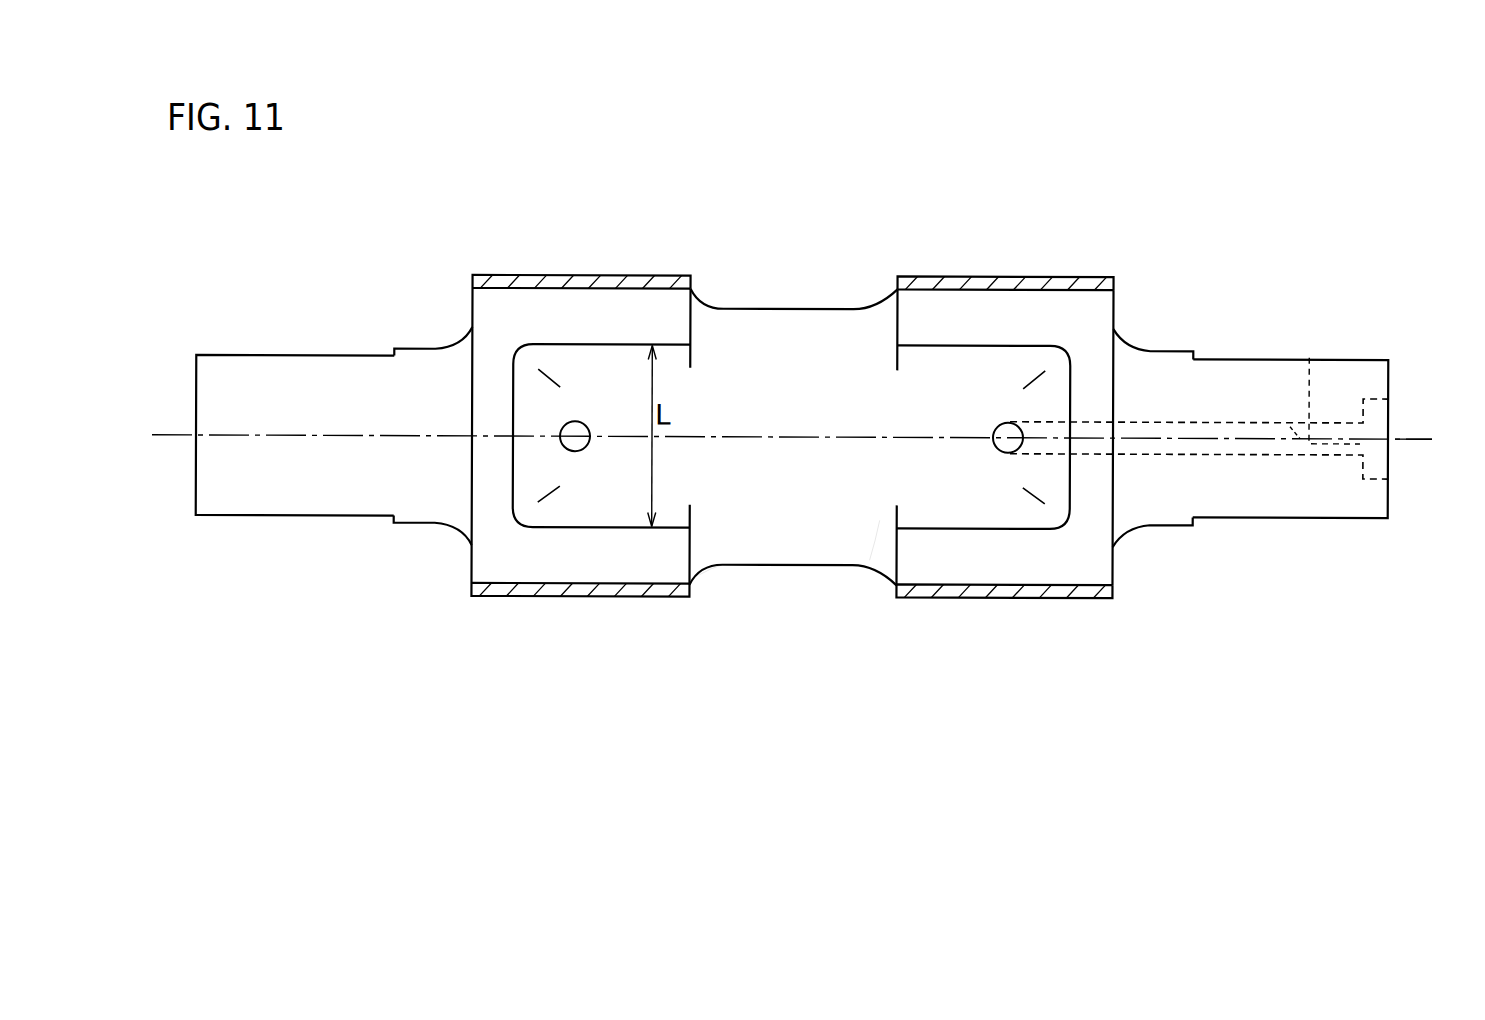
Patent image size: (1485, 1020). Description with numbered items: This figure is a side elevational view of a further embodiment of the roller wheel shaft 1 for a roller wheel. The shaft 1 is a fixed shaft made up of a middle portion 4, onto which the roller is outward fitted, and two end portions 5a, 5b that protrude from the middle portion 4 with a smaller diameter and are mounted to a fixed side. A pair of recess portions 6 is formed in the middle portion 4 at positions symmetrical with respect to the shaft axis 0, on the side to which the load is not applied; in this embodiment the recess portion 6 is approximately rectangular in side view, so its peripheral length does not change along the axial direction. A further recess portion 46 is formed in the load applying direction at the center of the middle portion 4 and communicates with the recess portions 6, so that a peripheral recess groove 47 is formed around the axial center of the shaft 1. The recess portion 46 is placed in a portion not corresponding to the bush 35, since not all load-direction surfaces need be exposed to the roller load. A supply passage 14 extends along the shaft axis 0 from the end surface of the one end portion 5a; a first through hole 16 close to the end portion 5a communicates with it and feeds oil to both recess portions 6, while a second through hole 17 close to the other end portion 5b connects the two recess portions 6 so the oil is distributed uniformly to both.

The roller wheel shaft 1 is at (1147, 298).
The middle portion 4 is at (808, 305).
The one end portion 5a is at (1310, 510).
The another end portion 5b is at (303, 503).
The recess portion 6 is at (933, 350).
The supply passage 14 is at (1199, 403).
The first through hole 16 is at (996, 444).
The second through hole 17 is at (585, 445).
The bush 35 is at (503, 598).
The recess portion 46 is at (705, 572).
The peripheral recess groove 47 is at (880, 520).
The shaft axis 0 is at (1410, 443).